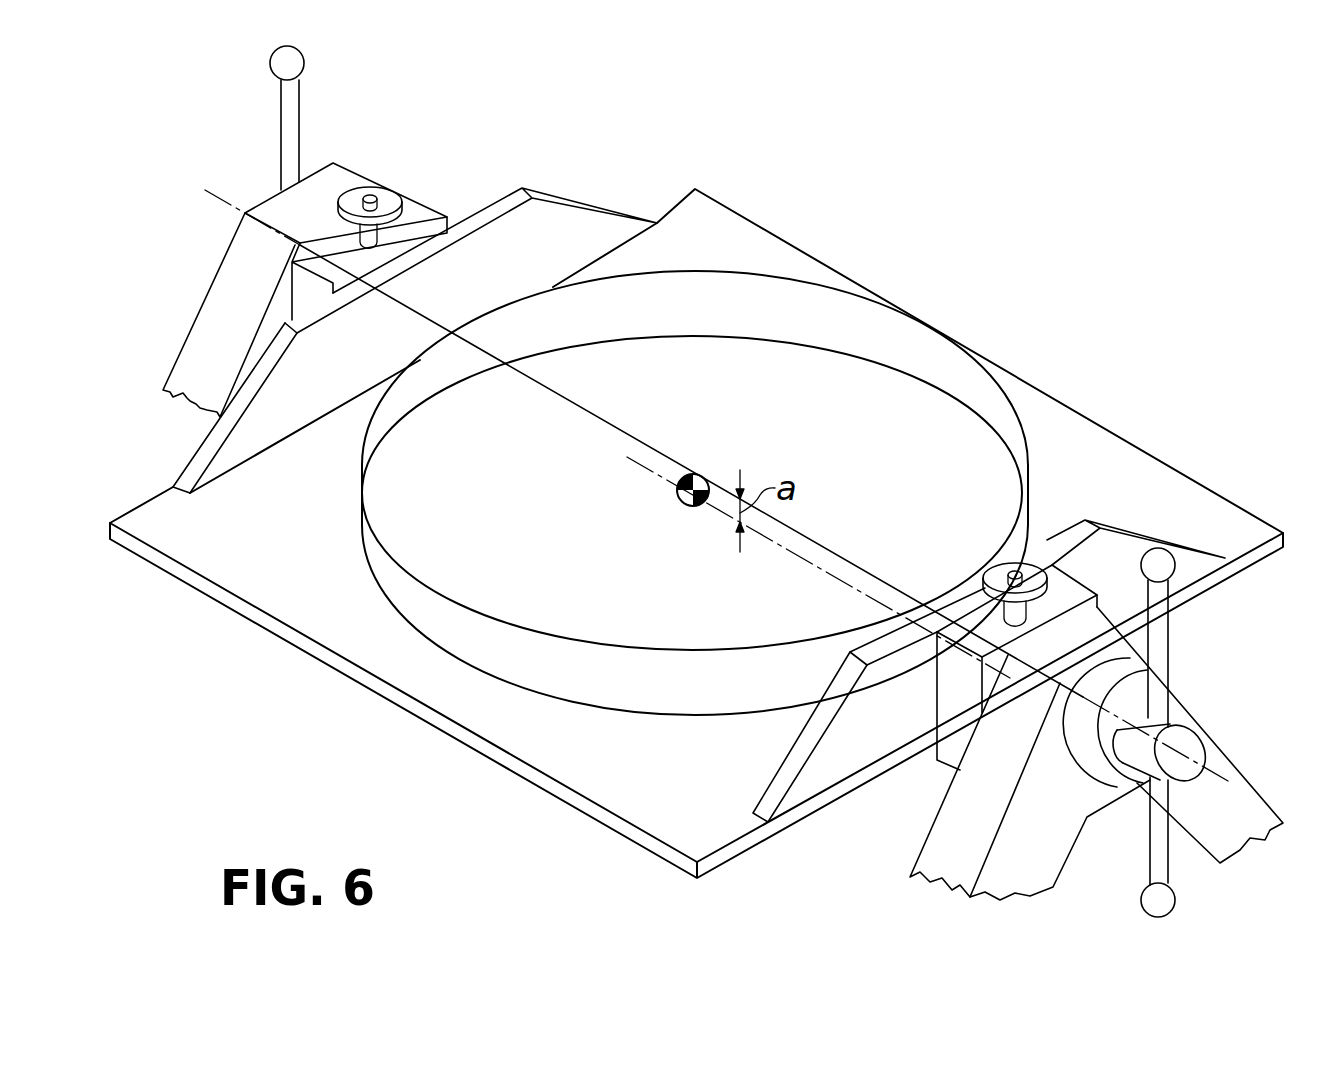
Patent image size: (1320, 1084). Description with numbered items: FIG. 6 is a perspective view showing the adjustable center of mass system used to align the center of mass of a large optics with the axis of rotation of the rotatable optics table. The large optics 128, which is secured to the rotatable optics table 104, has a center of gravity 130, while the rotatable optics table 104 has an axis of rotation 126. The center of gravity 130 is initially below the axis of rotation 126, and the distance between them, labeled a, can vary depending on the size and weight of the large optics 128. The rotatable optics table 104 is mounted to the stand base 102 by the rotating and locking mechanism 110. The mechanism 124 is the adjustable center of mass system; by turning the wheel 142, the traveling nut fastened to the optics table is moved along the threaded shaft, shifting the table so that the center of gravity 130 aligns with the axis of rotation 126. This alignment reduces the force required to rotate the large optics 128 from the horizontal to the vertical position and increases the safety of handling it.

The stand base 102 is at (238, 274).
The rotatable optics table 104 is at (290, 561).
The rotating and locking mechanism 110 is at (1180, 740).
The mechanism 124 is at (425, 215).
The axis of rotation 126 is at (615, 425).
The large optics 128 is at (488, 481).
The center of gravity 130 is at (680, 503).
The wheel 142 is at (376, 196).